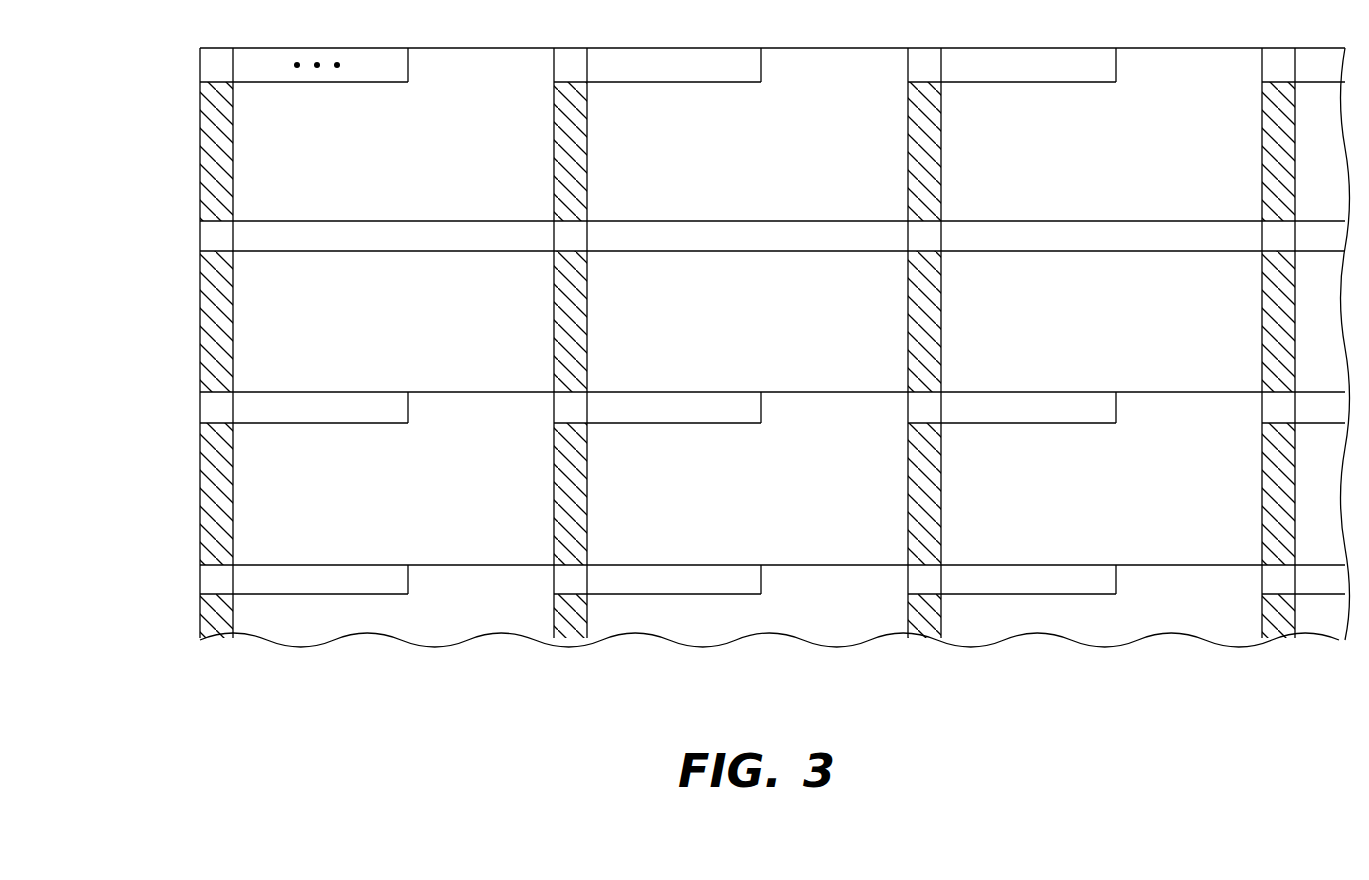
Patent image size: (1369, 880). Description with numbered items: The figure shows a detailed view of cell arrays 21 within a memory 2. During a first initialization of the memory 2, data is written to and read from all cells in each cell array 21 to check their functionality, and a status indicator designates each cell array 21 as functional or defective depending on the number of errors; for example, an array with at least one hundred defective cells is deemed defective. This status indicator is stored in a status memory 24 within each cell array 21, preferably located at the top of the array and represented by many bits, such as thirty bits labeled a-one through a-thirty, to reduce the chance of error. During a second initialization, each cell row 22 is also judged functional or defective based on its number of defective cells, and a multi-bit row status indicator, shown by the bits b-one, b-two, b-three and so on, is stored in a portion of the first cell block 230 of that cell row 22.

The memory 2 is at (178, 132).
The cell array 21 is at (772, 343).
The cell row 22 is at (1090, 220).
The status memory 24 is at (772, 321).
The first cell block 230 is at (748, 246).